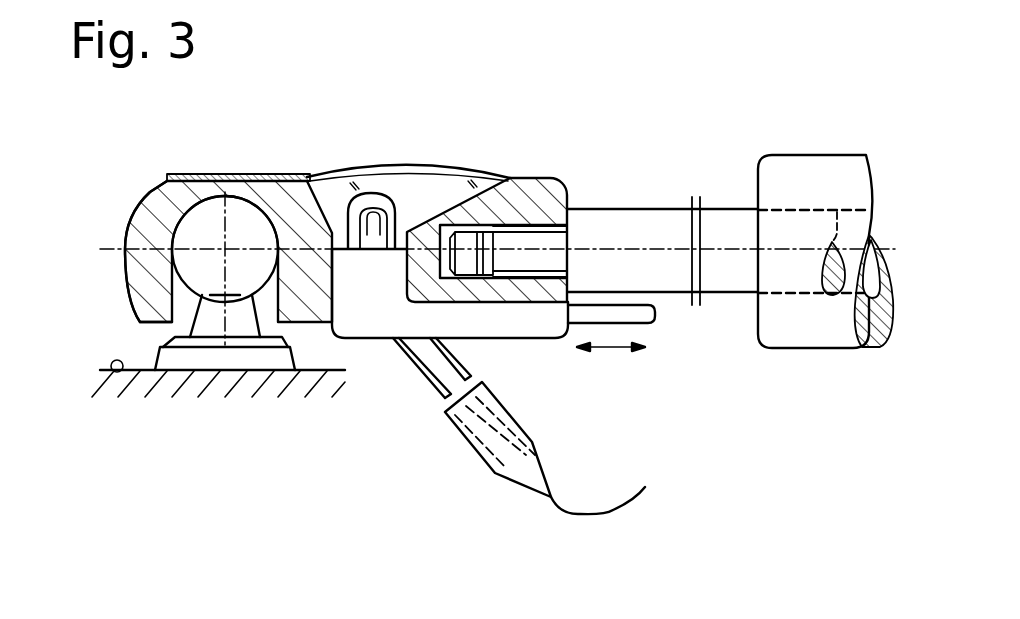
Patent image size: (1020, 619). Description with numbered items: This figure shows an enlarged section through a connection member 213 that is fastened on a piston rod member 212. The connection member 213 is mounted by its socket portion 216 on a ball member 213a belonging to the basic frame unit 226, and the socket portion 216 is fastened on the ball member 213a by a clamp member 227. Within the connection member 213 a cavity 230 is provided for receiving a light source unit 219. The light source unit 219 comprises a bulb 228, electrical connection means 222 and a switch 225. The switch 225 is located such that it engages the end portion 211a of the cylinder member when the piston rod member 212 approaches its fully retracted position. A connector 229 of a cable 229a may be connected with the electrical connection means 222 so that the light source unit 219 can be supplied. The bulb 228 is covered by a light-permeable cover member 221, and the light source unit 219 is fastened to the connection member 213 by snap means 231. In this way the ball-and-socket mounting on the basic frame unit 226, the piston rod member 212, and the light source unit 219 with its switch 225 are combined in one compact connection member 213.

The end portion of the cylinder member 211a is at (818, 155).
The piston rod member 212 is at (665, 208).
The connection member 213 is at (288, 170).
The ball member 213a is at (257, 217).
The socket portion 216 is at (165, 260).
The light source unit 219 is at (362, 318).
The light-permeable cover member 221 is at (466, 172).
The electrical connection means 222 is at (457, 363).
The switch 225 is at (640, 313).
The basic frame unit 226 is at (115, 373).
The clamp member 227 is at (212, 173).
The bulb 228 is at (397, 207).
The connector 229 is at (532, 445).
The cable 229a is at (625, 484).
The cavity 230 is at (332, 213).
The snap means 231 is at (327, 278).